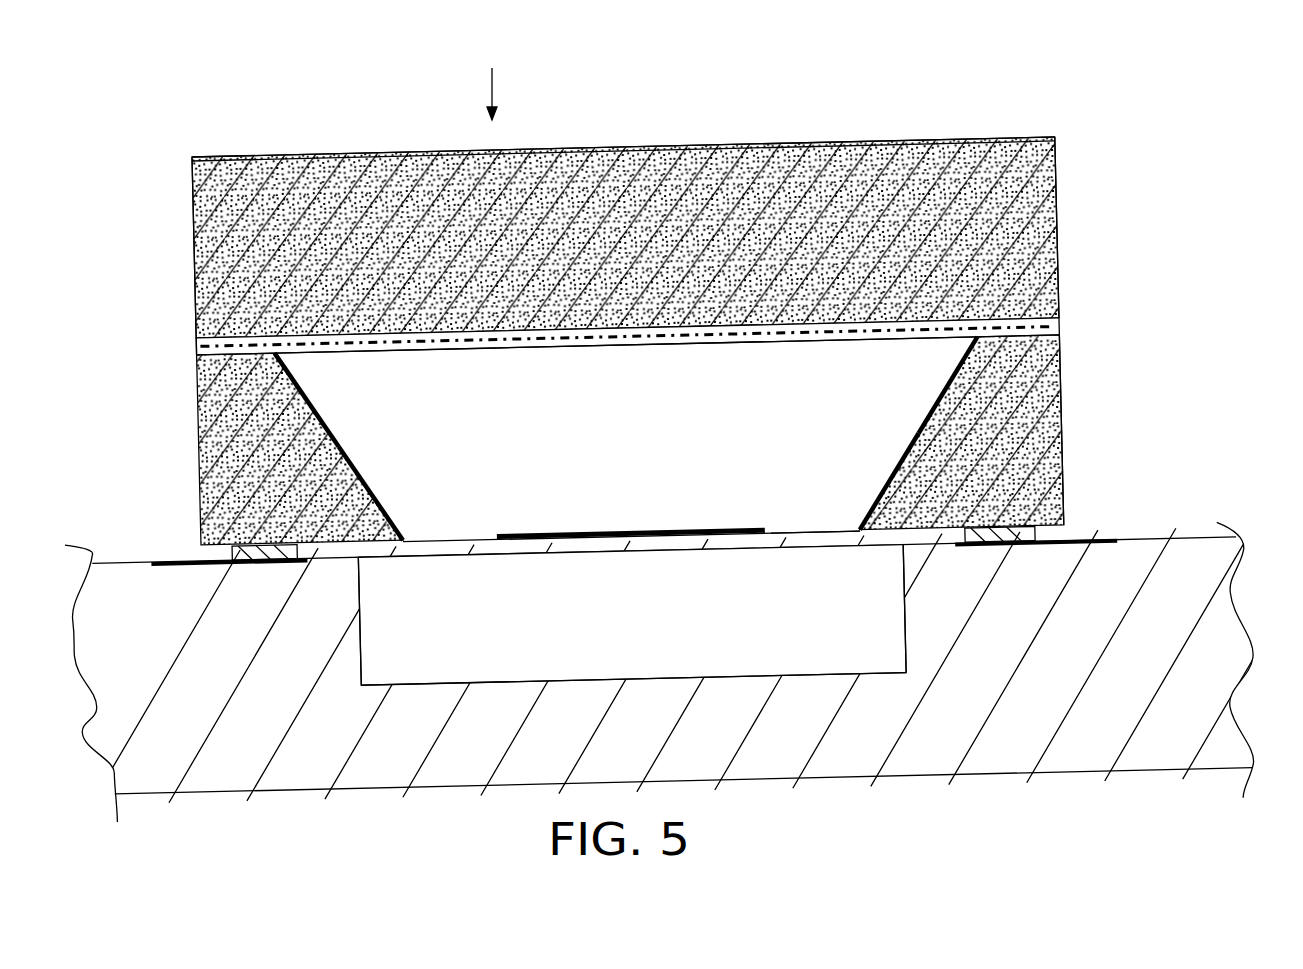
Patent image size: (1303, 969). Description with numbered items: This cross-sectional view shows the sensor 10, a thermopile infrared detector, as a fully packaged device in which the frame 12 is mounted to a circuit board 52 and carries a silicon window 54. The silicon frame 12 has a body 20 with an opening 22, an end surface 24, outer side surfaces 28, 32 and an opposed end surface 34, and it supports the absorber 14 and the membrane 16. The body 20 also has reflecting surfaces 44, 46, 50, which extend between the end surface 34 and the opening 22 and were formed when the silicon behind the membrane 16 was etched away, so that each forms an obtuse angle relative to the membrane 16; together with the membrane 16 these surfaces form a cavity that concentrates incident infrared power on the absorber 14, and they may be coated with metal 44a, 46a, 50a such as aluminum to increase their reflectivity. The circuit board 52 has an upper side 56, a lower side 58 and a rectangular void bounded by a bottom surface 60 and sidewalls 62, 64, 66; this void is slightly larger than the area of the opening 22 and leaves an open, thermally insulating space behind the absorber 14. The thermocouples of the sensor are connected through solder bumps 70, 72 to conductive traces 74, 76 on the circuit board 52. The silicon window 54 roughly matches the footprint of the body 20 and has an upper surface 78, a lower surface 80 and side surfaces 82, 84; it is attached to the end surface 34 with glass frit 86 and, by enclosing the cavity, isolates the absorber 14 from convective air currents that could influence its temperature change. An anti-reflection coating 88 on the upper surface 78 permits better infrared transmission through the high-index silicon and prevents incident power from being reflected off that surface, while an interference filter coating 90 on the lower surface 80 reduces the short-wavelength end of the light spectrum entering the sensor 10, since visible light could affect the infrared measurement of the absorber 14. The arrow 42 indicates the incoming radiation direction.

The sensor 10 is at (1156, 118).
The frame 12 is at (1110, 379).
The absorber 14 is at (608, 528).
The membrane 16 is at (450, 554).
The body 20 is at (1042, 364).
The opening 22 is at (400, 540).
The end surface 24 is at (903, 532).
The outer side surface 28 is at (1058, 403).
The outer side surface 32 is at (198, 447).
The opposed end surface 34 is at (198, 325).
The applied pressure direction 42 is at (492, 78).
The reflecting surface 44 is at (632, 430).
The metal coating 44a is at (557, 445).
The reflecting surface 46 is at (963, 362).
The metal coating 46a is at (900, 465).
The reflecting surface 50 is at (330, 427).
The metal coating 50a is at (375, 483).
The circuit board 52 is at (1200, 628).
The silicon window 54 is at (941, 132).
The upper side 56 is at (1170, 539).
The lower side 58 is at (1075, 780).
The bottom surface 60 is at (690, 684).
The sidewall 62 is at (361, 585).
The sidewall 64 is at (611, 615).
The sidewall 66 is at (905, 618).
The solder bump 70 is at (1037, 541).
The solder bump 72 is at (232, 553).
The conductive trace 74 is at (1097, 538).
The conductive trace 76 is at (165, 558).
The upper surface 78 is at (759, 142).
The lower surface 80 is at (750, 338).
The side surface 82 is at (1052, 157).
The side surface 84 is at (192, 188).
The glass frit 86 is at (197, 350).
The anti-reflection coating 88 is at (676, 143).
The interference filter coating 90 is at (393, 352).